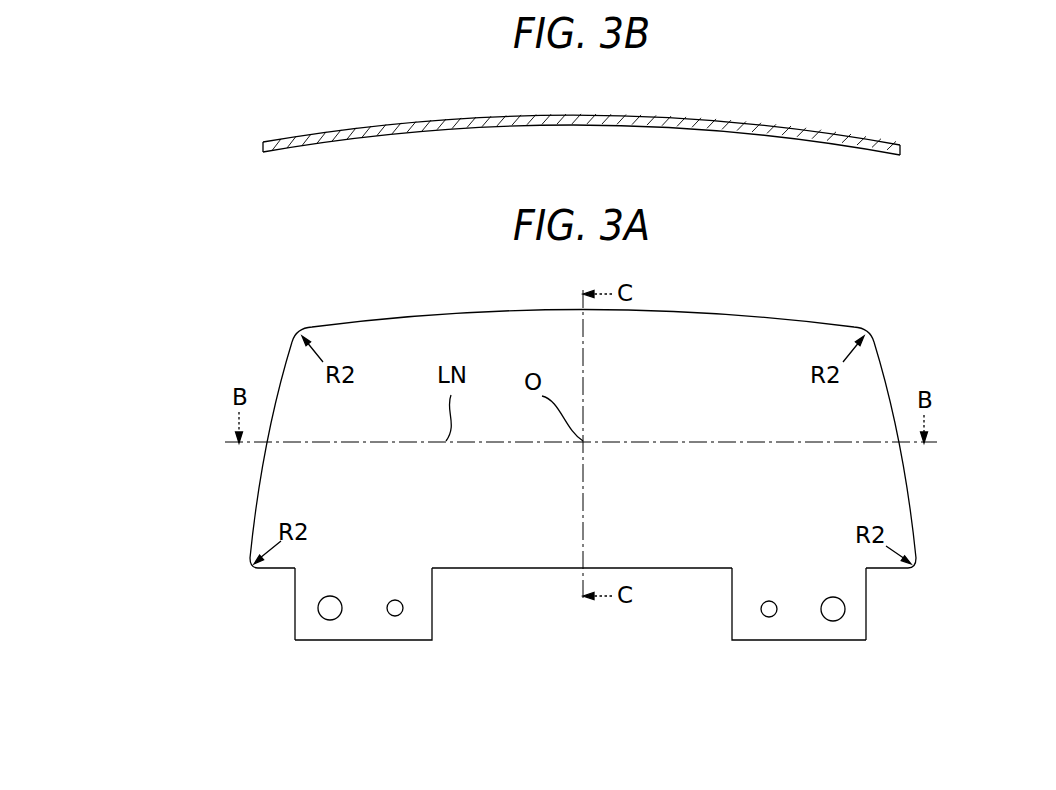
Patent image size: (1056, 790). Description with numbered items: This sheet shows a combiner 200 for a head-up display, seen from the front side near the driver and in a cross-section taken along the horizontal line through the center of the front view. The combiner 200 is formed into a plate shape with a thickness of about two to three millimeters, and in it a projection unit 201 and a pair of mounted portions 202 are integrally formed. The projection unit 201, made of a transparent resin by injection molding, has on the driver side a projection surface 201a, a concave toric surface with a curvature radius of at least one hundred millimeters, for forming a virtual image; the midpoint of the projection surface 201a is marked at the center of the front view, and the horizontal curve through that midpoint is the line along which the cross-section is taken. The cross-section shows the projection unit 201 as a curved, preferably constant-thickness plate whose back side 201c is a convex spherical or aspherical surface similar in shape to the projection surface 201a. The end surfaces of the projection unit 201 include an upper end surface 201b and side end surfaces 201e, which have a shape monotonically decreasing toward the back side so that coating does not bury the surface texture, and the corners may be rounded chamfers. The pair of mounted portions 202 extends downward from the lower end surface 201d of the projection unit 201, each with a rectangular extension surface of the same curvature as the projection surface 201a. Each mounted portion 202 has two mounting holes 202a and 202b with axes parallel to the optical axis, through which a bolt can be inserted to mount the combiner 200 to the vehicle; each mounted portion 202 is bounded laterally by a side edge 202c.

In FIG. 3B, the combiner 200 is at (561, 130).
In FIG. 3A, the combiner 200 is at (605, 502).
In FIG. 3A, the projection unit 201 is at (614, 454).
In FIG. 3B, the projection surface 201a is at (690, 130).
In FIG. 3A, the projection surface 201a is at (700, 410).
In FIG. 3A, the upper end surface 201b is at (390, 301).
In FIG. 3B, the back side 201c is at (768, 126).
In FIG. 3A, the lower end surface 201d is at (531, 571).
In FIG. 3A, the side end surfaces 201e is at (279, 384).
In FIG. 3A, the mounted portions 202 is at (580, 615).
In FIG. 3A, the mounting hole 202a is at (331, 606).
In FIG. 3A, the mounting hole 202b is at (396, 600).
In FIG. 3A, the side surface of protruding portion 202c is at (294, 630).